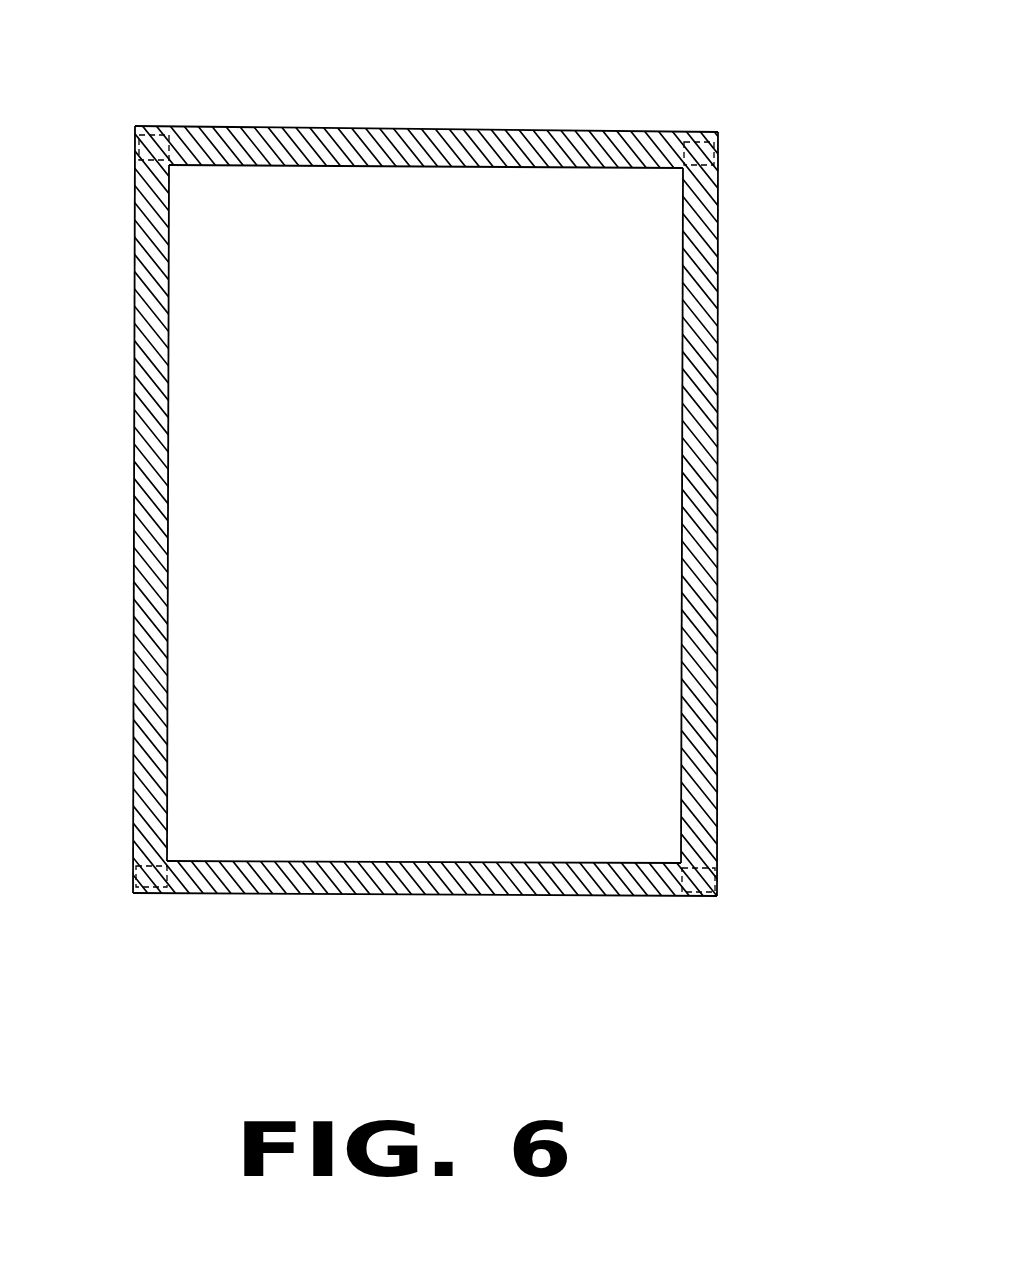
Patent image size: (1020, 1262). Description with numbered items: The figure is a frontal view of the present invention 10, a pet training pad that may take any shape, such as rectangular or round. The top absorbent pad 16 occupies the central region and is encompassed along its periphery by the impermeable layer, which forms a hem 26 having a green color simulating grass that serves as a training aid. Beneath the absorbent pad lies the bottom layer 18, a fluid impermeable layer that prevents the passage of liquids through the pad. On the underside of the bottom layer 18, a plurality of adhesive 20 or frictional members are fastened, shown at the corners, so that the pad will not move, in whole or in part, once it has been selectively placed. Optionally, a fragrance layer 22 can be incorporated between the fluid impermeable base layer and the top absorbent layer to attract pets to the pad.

The present invention 10 is at (510, 500).
The top absorbent pad 16 is at (430, 213).
The bottom layer 18 is at (693, 407).
The adhesive 20 is at (150, 140).
The fragrance layer 22 is at (542, 847).
The hem 26 is at (155, 418).